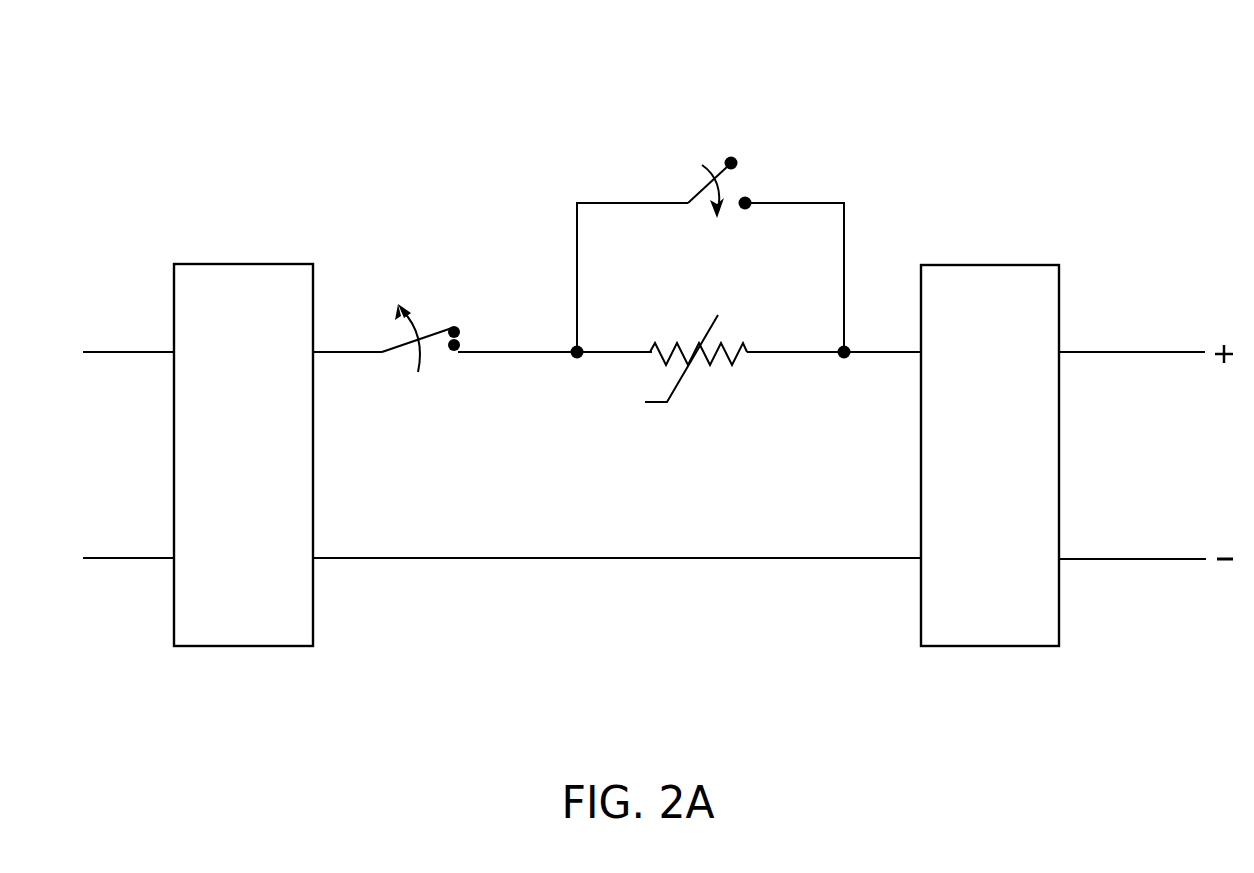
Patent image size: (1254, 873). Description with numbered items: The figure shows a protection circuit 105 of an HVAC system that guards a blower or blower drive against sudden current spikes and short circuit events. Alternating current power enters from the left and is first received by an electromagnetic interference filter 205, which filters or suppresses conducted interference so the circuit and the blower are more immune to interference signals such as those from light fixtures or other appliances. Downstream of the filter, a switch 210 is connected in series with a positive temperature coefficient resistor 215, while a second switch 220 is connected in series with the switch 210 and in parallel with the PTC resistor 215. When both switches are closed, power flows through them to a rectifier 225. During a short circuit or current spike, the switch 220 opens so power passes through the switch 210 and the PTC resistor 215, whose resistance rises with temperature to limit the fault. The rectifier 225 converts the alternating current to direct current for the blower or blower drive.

The protection circuit 105 is at (630, 42).
The electromagnetic interference (EMI) filter 205 is at (210, 264).
The switch 210 is at (419, 363).
The positive temperature coefficient (PTC) resistor 215 is at (733, 363).
The switch 220 is at (780, 203).
The rectifier 225 is at (998, 265).